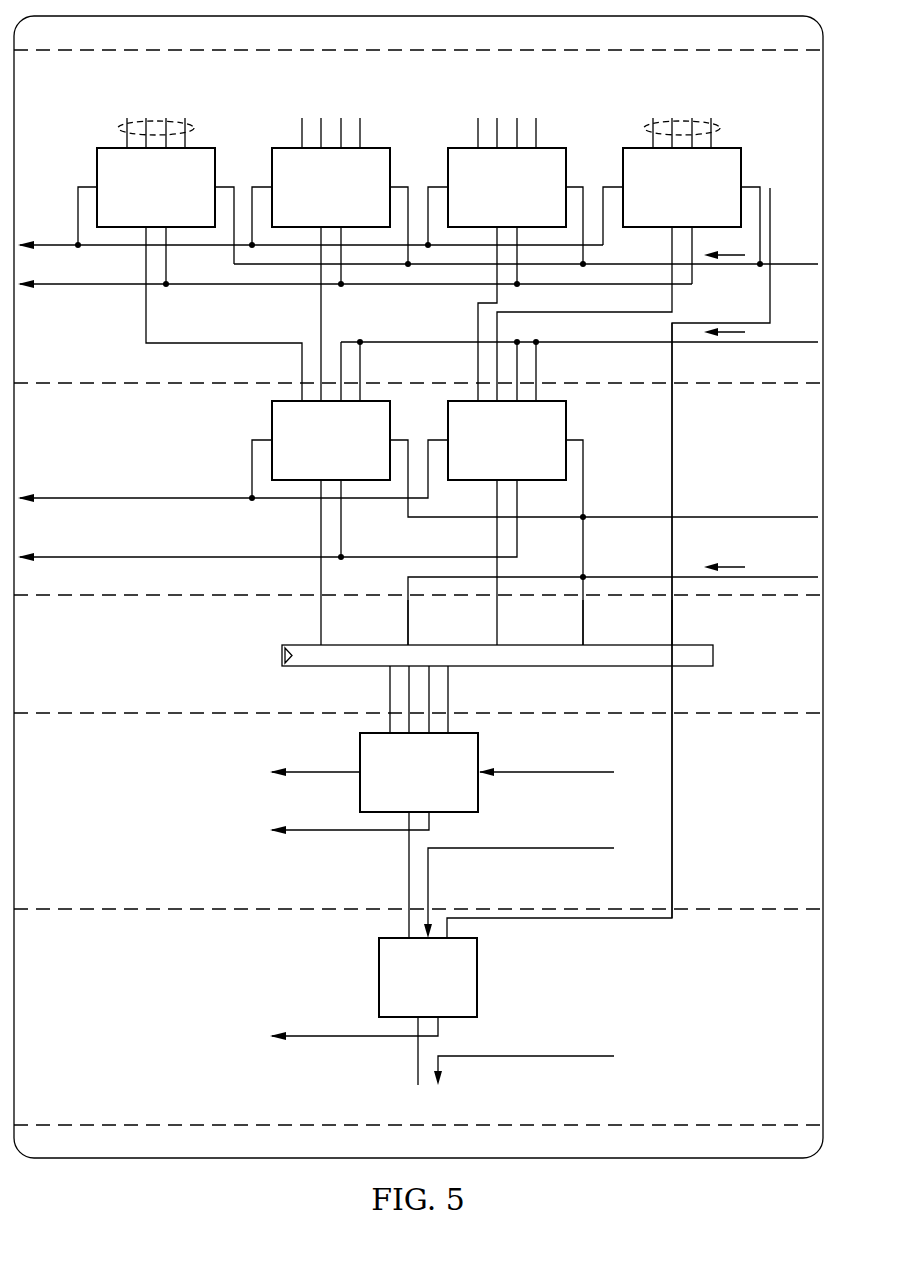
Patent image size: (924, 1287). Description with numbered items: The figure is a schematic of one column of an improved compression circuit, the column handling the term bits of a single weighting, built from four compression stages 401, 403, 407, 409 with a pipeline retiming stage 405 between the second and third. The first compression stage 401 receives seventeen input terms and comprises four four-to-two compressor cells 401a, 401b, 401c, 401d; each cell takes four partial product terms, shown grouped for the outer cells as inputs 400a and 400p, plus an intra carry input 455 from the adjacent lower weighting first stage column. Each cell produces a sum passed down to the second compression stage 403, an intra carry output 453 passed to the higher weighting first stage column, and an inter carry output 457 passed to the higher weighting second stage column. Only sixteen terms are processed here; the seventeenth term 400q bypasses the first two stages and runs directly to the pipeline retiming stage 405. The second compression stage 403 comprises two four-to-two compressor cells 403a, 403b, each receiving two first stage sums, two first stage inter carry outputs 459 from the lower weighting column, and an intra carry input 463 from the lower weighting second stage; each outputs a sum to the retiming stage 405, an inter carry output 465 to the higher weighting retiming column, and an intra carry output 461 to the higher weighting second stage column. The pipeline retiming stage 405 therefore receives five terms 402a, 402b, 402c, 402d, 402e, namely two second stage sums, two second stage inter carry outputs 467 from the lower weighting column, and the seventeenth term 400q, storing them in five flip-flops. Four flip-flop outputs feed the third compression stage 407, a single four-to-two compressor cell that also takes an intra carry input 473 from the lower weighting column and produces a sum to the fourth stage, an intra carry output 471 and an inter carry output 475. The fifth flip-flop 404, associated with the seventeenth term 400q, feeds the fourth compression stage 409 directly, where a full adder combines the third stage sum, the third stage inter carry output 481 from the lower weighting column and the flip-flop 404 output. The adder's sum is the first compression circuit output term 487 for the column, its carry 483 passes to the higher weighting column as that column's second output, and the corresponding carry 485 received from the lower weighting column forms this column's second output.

The input terms to first compressor 400a is at (118, 130).
The input terms to fourth compressor 400p is at (722, 128).
The seventeenth partial product term 400q is at (770, 195).
The first compression stage 401 is at (438, 114).
The first stage 4:2 compressor cell 401a is at (97, 170).
The first stage 4:2 compressor cell 401b is at (285, 148).
The first stage 4:2 compressor cell 401c is at (553, 148).
The first stage 4:2 compressor cell 401d is at (640, 148).
The retiming register input 402a is at (320, 633).
The retiming register input 402b is at (407, 633).
The retiming register input 402c is at (495, 633).
The retiming register input 402d is at (581, 633).
The retiming register input 402e is at (670, 633).
The second compression stage 403 is at (113, 477).
The second stage 4:2 compressor cell 403a is at (272, 417).
The second stage 4:2 compressor cell 403b is at (566, 417).
The fifth flip-flop 404 is at (672, 790).
The pipeline retiming stage 405 is at (113, 692).
The third compression stage 407 is at (113, 849).
The fourth compression stage 409 is at (113, 1057).
The carry-out line 453 is at (50, 243).
The intra carry output 455 is at (790, 262).
The inter carry output 457 is at (48, 290).
The first compression stage inter carry outputs 459 is at (790, 340).
The intra carry out term 461 is at (125, 501).
The intra carry output 463 is at (790, 515).
The inter carry output 465 is at (200, 555).
The second compression stage inter carry outputs 467 is at (790, 575).
The intra carry output 471 is at (320, 775).
The third compression stage intra carry output 473 is at (590, 775).
The inter carry output 475 is at (320, 833).
The third compression stage inter carry output 481 is at (590, 851).
The first carry output 483 is at (320, 1040).
The carry output 485 is at (590, 1058).
The first compression circuit output term 487 is at (416, 1068).